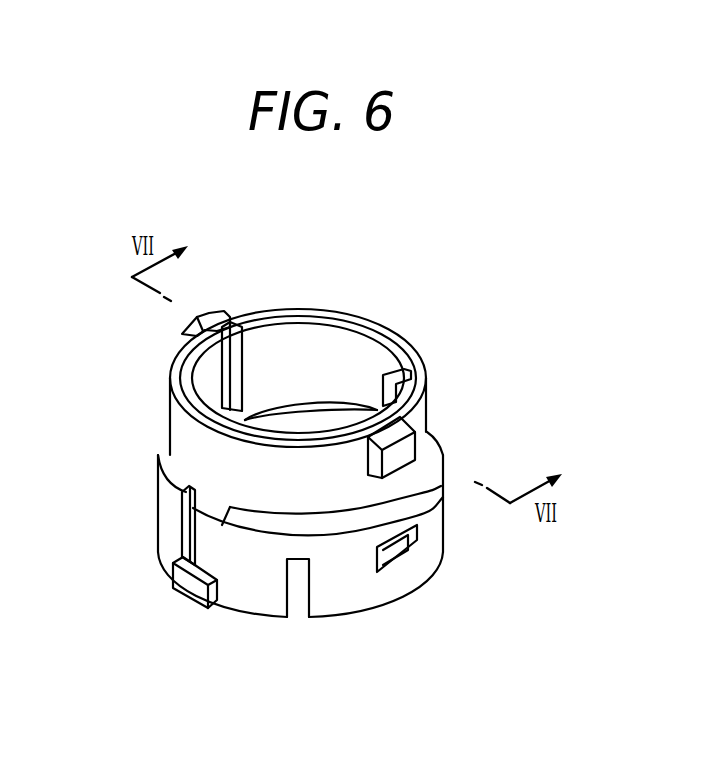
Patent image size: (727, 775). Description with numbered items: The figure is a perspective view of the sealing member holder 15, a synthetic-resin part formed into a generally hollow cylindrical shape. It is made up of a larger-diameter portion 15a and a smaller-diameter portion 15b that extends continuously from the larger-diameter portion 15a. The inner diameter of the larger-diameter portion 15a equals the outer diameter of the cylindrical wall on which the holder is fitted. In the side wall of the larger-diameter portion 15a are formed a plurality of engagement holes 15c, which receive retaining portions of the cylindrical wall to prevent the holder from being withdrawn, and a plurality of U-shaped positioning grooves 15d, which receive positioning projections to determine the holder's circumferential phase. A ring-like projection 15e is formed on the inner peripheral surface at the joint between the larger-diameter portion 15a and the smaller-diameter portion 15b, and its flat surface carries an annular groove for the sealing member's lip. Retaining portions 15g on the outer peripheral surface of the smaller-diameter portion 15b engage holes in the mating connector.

The sealing member holder 15 is at (380, 330).
The larger-diameter portion 15a is at (158, 528).
The smaller-diameter portion 15b is at (168, 404).
The engagement hole 15c is at (390, 550).
The positioning groove 15d is at (298, 607).
The ring-like projection 15e is at (304, 412).
The retaining portion 15g is at (402, 430).